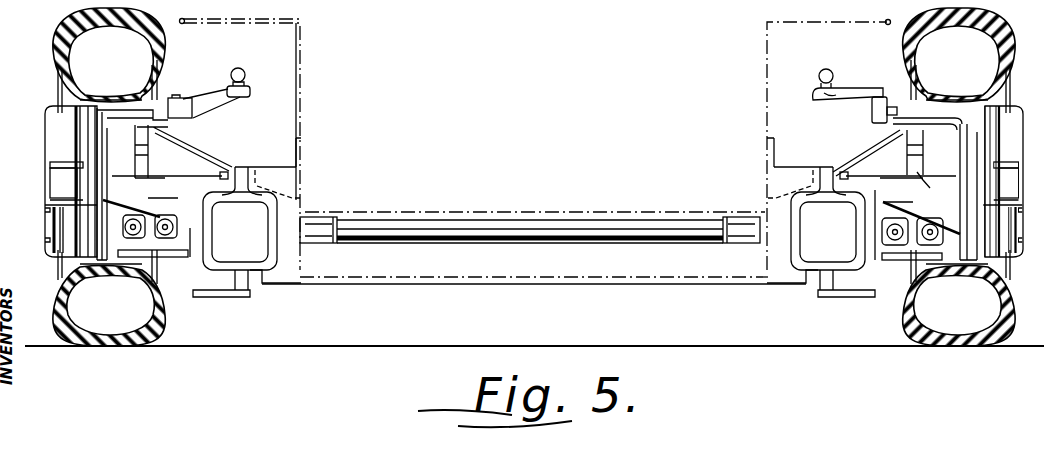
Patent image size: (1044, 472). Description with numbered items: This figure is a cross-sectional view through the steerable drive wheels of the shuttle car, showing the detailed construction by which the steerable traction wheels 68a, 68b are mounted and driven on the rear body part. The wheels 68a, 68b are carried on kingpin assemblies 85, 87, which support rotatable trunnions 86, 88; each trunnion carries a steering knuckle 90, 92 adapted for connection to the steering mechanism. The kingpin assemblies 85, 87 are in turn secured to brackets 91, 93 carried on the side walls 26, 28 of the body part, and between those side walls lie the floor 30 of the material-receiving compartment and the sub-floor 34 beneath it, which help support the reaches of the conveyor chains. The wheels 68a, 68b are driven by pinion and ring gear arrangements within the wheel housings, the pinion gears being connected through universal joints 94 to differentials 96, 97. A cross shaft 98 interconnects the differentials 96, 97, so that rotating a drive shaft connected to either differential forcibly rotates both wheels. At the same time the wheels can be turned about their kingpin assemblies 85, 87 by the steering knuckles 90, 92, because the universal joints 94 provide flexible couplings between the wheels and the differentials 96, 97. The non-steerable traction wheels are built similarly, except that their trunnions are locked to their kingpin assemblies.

The side wall 26 is at (305, 95).
The side wall 28 is at (767, 95).
The floor 30 is at (497, 212).
The sub-floor 34 is at (508, 282).
The steerable traction wheel 68a is at (45, 127).
The steerable traction wheel 68b is at (905, 323).
The kingpin assembly 85 is at (142, 176).
The rotatable trunnion 86 is at (122, 152).
The kingpin assembly 87 is at (921, 181).
The rotatable trunnion 88 is at (940, 155).
The steering knuckle 90 is at (238, 98).
The bracket 91 is at (278, 182).
The steering knuckle 92 is at (862, 107).
The bracket 93 is at (793, 182).
The universal joint 94 is at (175, 190).
The differential 96 is at (262, 242).
The differential 97 is at (812, 242).
The cross shaft 98 is at (605, 232).